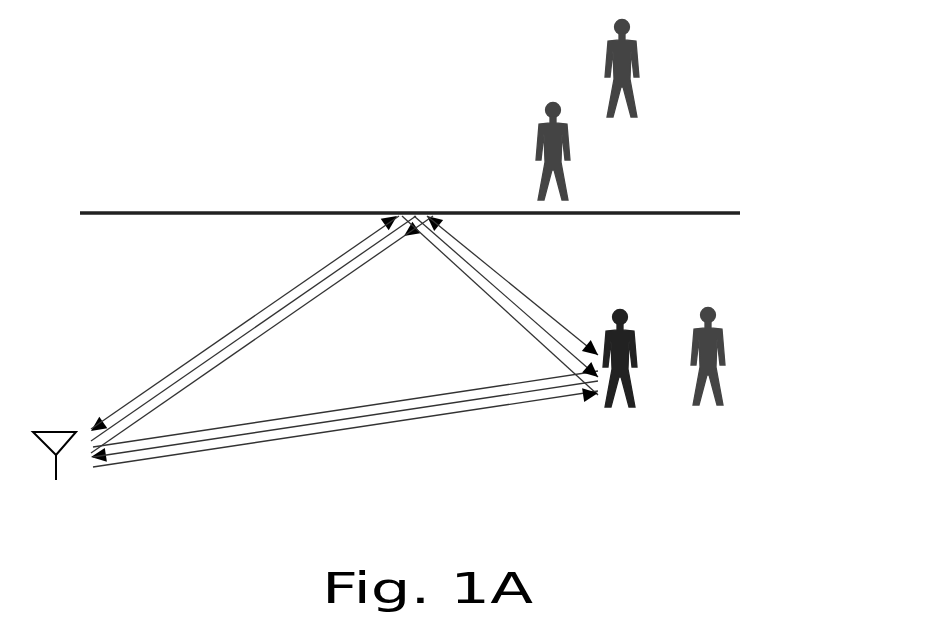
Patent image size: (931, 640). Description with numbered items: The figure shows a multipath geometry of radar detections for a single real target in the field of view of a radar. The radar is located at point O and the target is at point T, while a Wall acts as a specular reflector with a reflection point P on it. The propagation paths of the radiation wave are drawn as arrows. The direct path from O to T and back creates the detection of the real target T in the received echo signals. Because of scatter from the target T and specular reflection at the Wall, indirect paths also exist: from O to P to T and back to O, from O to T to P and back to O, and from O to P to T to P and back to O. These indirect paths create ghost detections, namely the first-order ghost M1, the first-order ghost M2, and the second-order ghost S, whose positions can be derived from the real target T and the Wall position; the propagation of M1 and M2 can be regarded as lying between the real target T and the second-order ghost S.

The second-order ghost S is at (628, 42).
The first-order ghost M1 is at (553, 105).
The first-order ghost M2 is at (712, 310).
The target T is at (620, 308).
The reflection point on the wall P is at (412, 201).
The radar O is at (70, 468).
The wall Wall is at (455, 210).